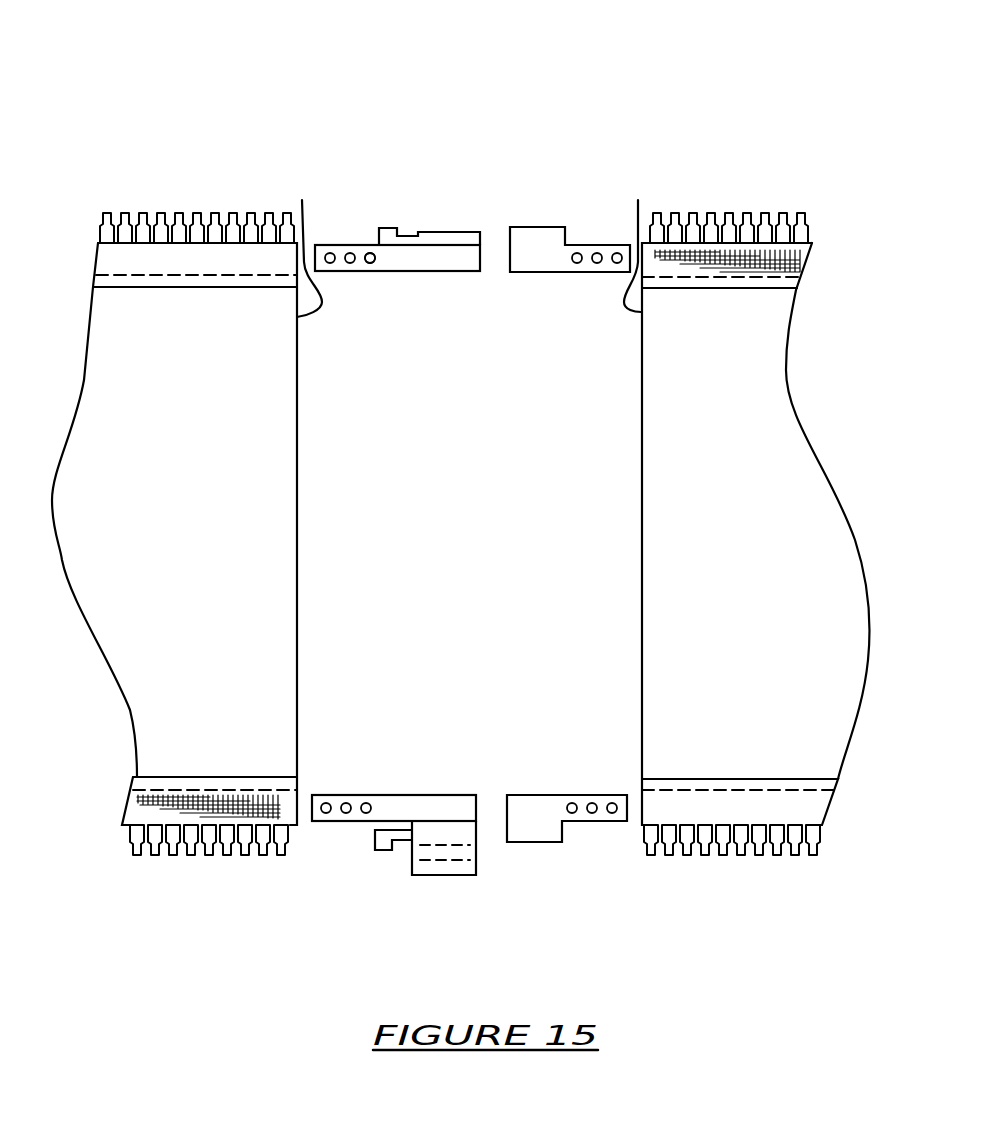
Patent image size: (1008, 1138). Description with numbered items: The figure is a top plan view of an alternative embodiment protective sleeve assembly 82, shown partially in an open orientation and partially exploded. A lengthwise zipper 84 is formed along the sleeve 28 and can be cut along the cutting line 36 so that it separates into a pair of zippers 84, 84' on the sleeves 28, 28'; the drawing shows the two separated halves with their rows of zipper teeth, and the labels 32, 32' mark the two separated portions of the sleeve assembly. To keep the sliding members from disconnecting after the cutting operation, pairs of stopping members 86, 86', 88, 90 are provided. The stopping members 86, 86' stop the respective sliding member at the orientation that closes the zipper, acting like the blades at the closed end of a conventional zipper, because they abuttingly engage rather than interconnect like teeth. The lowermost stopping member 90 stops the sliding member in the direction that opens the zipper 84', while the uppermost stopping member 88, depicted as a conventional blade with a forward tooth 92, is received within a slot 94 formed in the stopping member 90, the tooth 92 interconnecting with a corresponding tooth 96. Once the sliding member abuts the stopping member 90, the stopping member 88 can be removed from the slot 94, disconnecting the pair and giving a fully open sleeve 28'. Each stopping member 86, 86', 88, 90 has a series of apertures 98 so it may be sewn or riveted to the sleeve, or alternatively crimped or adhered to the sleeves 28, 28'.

The protective sleeve assembly 82 is at (546, 78).
The sleeve 28 is at (755, 534).
The sleeve 28' is at (160, 534).
The edge strip 32 is at (619, 650).
The second edge strip 32' is at (320, 647).
The cutting line 36 is at (474, 244).
The zipper 84 is at (737, 501).
The zipper 84' is at (197, 501).
The stopping member 86 is at (570, 209).
The stopping member 86' is at (565, 776).
The stopping member 88 is at (455, 232).
The stopping member 90 is at (406, 795).
The forward tooth 92 is at (389, 227).
The slot 94 is at (402, 858).
The tooth 96 is at (385, 851).
The apertures 98 is at (374, 259).